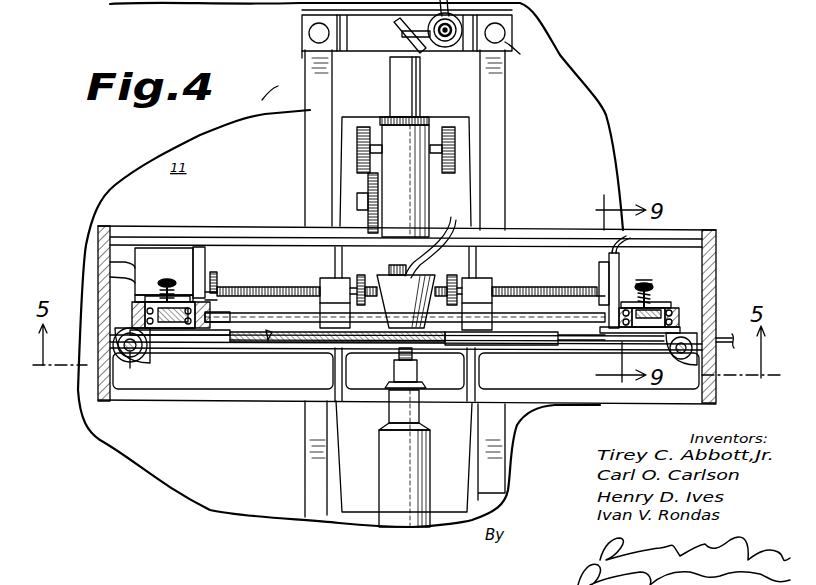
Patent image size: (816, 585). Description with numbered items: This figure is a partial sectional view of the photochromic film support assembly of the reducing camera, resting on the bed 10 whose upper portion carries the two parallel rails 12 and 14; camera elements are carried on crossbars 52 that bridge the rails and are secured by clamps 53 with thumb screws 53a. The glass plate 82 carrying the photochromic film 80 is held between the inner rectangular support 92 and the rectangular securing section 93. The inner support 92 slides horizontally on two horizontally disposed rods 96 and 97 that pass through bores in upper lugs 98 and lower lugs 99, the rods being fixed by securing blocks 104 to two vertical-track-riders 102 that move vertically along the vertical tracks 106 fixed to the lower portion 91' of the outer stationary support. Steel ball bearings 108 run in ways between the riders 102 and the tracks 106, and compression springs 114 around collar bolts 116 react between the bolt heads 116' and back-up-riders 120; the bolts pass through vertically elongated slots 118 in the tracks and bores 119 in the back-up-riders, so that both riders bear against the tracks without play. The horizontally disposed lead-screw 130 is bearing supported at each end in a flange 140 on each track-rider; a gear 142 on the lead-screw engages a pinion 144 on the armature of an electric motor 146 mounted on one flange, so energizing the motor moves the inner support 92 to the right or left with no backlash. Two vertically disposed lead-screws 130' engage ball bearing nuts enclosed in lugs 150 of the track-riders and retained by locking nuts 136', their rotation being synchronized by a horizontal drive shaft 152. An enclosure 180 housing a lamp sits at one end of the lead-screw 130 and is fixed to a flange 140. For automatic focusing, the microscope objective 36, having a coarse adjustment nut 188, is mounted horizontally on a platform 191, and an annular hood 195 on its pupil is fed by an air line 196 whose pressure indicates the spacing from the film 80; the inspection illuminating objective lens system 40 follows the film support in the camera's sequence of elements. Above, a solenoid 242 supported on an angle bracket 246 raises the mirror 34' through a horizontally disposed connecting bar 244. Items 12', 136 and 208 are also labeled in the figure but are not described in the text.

The bed 10 is at (124, 3).
The rail 12 is at (504, 140).
The casting wall 12' is at (259, 81).
The rail 14 is at (306, 180).
The mirror 34' is at (391, 35).
The printing objective lens system 36 is at (416, 199).
The inspection illuminating objective lens system 40 is at (374, 452).
The crossbar 52 is at (314, 52).
The clamp 53 is at (298, 14).
The thumb screw 53a is at (526, 56).
The photochromic film 80 is at (308, 343).
The glass plate 82 is at (374, 346).
The lower portion of outer stationary support 91' is at (737, 351).
The inner rectangular support 92 is at (286, 343).
The rectangular securing section 93 is at (464, 348).
The rod 96 is at (530, 313).
The rod 97 is at (286, 290).
The upper lug 98 is at (506, 287).
The lower lug 99 is at (332, 276).
The vertical-track-rider 102 is at (156, 337).
The securing block 104 is at (226, 342).
The vertical track 106 is at (132, 312).
The steel ball bearing 108 is at (194, 330).
The compression spring 114 is at (160, 246).
The collar bolt 116 is at (153, 252).
The bolt head 116' is at (402, 253).
The vertically elongated slot 118 is at (112, 336).
The bore 119 is at (136, 300).
The back-up-rider 120 is at (182, 285).
The horizontally disposed lead-screw 130 is at (581, 278).
The vertically disposed lead-screw 130' is at (405, 361).
The gear 136 is at (447, 254).
The locking nut 136' is at (140, 373).
The flange 140 is at (200, 248).
The gear 142 is at (218, 284).
The pinion 144 is at (206, 290).
The electric motor 146 is at (132, 263).
The lug 150 is at (407, 321).
The horizontal drive shaft 152 is at (560, 345).
The enclosure 180 is at (600, 262).
The coarse adjustment nut 188 is at (380, 124).
The platform 191 is at (472, 170).
The annular hood 195 is at (432, 276).
The air line 196 is at (455, 233).
The pinion 208 is at (380, 203).
The solenoid 242 is at (456, 46).
The connecting bar 244 is at (434, 44).
The angle bracket 246 is at (382, 56).